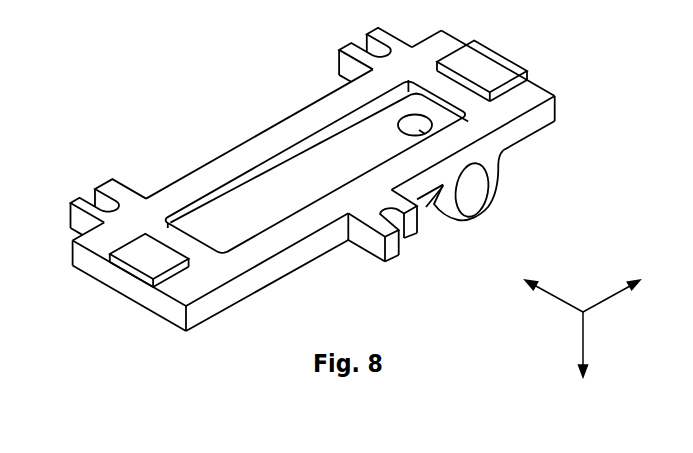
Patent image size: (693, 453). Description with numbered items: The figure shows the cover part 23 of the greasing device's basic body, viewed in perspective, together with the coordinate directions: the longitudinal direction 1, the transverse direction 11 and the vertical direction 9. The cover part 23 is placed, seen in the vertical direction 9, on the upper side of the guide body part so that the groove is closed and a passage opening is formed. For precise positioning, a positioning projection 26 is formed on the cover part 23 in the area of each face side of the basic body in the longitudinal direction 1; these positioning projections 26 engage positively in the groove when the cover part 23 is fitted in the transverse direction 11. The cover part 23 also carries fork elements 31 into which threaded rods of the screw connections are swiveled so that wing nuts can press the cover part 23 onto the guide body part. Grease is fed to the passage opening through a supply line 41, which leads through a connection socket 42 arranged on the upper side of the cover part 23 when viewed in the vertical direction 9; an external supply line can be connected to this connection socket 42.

The cover part 23 is at (212, 133).
The fork element 31 is at (109, 186).
The positioning projection 26 is at (145, 250).
The supply line 41 is at (482, 198).
The connection socket 42 is at (499, 192).
The transverse direction 11 is at (532, 266).
The longitudinal direction 1 is at (642, 266).
The vertical direction 9 is at (594, 361).